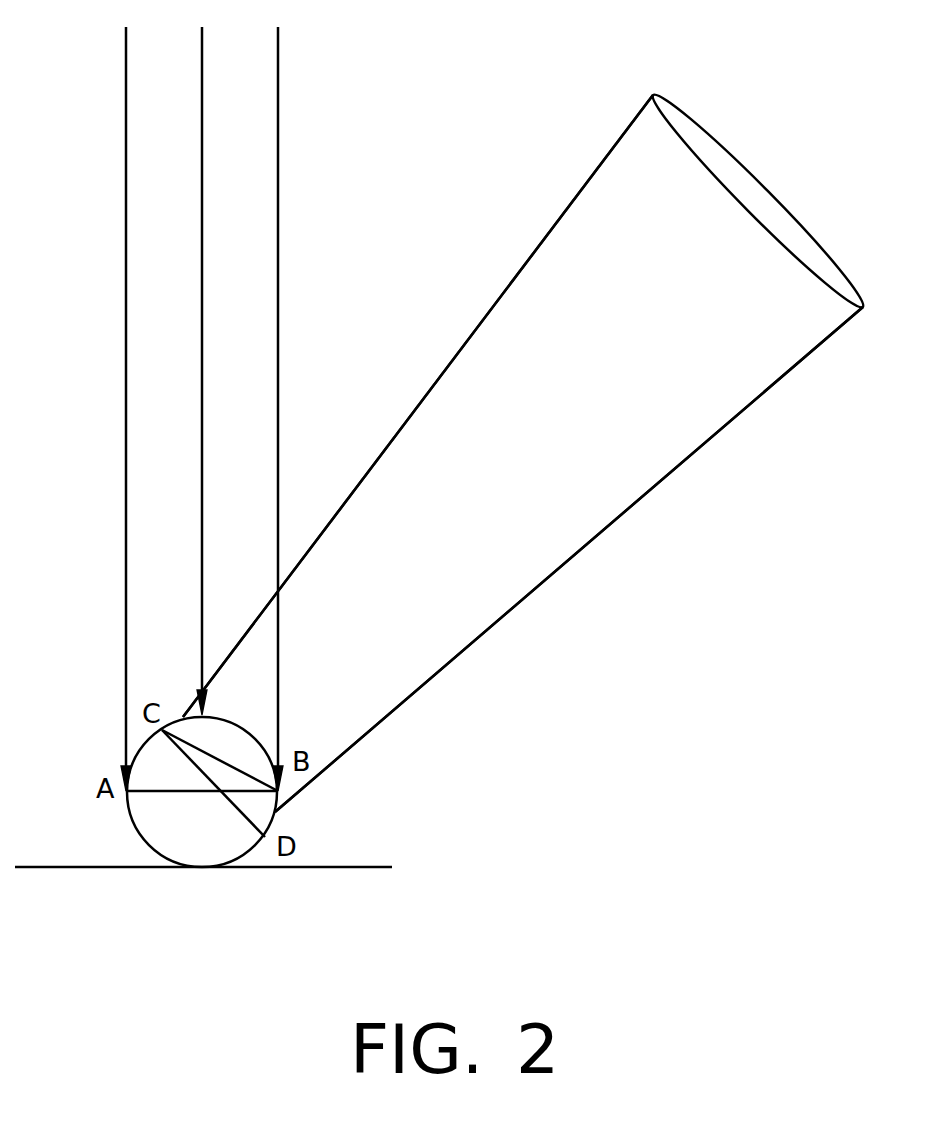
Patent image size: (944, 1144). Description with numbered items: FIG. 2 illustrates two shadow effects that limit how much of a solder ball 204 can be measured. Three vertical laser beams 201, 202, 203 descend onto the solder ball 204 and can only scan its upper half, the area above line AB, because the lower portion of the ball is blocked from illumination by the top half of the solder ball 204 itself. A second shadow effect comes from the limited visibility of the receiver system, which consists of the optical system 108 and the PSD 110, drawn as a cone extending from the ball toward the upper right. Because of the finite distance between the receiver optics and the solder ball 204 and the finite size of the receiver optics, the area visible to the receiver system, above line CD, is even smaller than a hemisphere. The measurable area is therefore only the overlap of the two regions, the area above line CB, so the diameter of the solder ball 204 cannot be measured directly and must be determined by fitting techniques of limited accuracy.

The laser beam 201 is at (126, 62).
The laser beam 202 is at (202, 121).
The laser beam 203 is at (278, 161).
The solder ball 204 is at (183, 866).
The optical system 108 is at (745, 167).
The PSD 110 is at (523, 453).